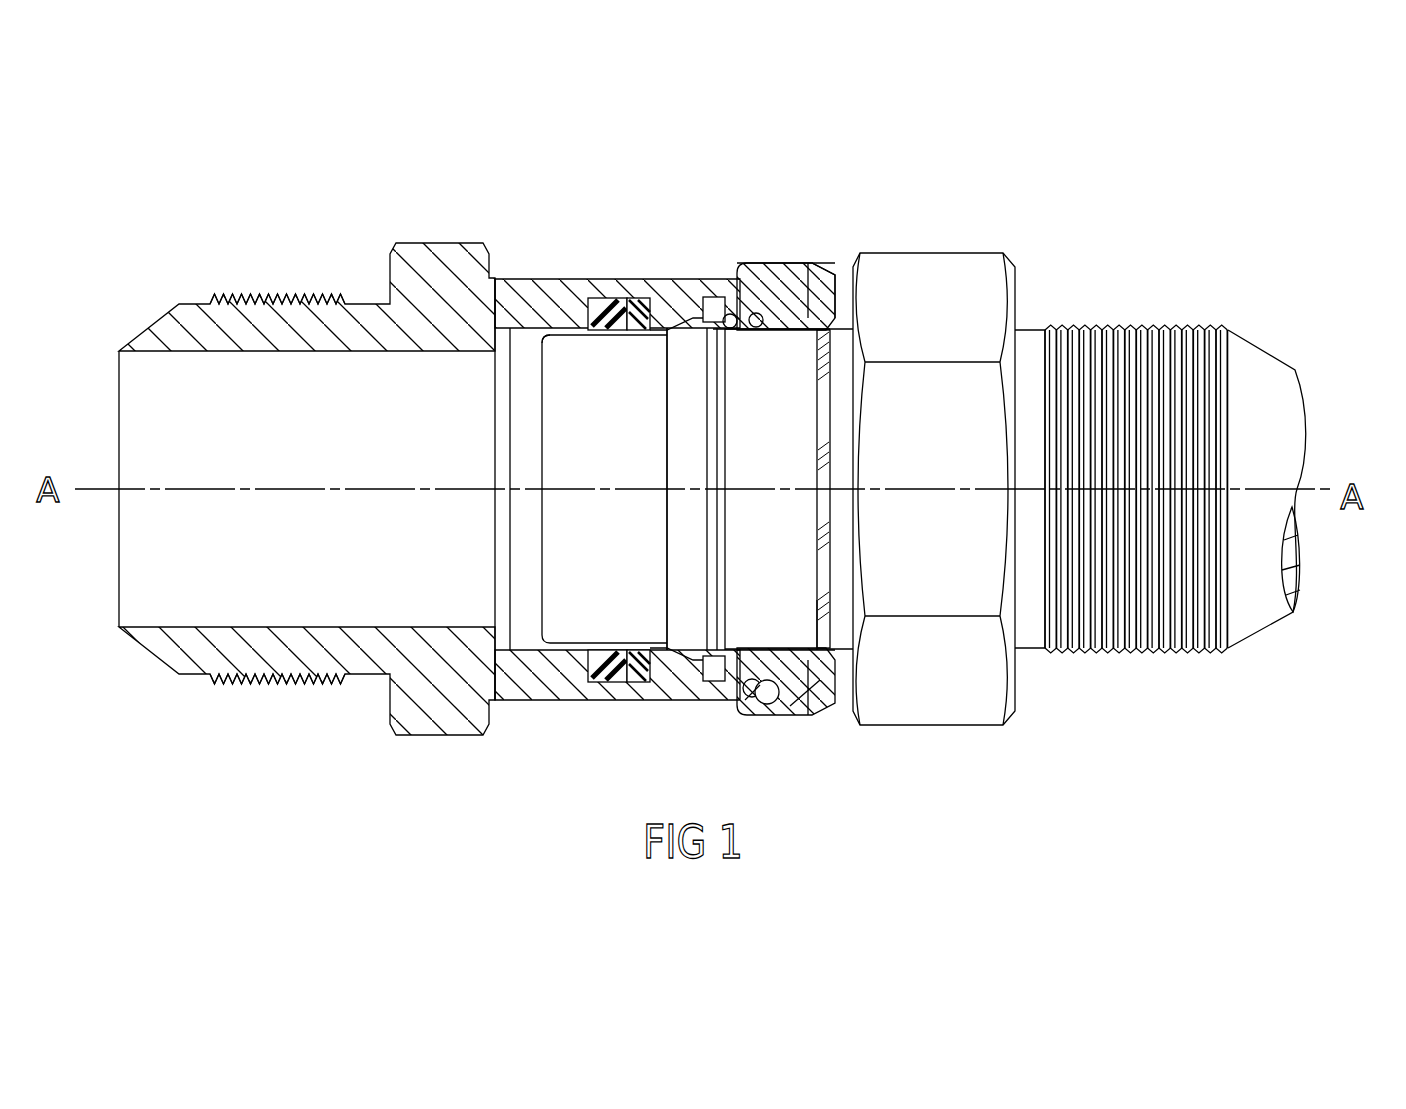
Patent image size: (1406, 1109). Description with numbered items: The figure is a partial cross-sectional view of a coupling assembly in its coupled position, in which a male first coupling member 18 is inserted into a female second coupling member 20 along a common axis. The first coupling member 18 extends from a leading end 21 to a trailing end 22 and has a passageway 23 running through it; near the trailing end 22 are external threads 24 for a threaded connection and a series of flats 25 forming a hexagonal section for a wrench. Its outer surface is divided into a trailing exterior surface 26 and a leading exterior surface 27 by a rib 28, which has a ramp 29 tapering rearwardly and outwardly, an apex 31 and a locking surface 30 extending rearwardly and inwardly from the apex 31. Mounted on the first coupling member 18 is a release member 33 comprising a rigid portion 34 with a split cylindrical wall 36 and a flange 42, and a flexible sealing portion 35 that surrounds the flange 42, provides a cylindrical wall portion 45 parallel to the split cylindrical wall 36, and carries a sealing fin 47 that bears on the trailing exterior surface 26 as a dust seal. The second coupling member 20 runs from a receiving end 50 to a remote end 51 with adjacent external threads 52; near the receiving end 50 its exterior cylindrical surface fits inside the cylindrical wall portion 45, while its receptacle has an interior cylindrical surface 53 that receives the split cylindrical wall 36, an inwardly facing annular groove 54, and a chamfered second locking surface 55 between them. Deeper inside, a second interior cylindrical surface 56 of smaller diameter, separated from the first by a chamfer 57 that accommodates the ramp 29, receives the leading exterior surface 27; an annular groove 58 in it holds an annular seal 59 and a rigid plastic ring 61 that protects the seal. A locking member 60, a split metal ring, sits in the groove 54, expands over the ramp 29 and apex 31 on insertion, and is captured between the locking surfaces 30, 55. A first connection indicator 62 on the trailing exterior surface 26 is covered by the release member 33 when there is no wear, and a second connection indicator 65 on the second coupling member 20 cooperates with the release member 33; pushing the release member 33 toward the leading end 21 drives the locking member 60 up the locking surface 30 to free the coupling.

The first coupling member 18 is at (1030, 292).
The second coupling member 20 is at (402, 205).
The leading end 21 is at (518, 640).
The trailing end 22 is at (1300, 378).
The passageway 23 is at (1292, 588).
The external threads 24 is at (1112, 325).
The flats 25 is at (938, 270).
The trailing exterior surface 26 is at (775, 650).
The leading exterior surface 27 is at (580, 335).
The rib 28 is at (660, 405).
The ramp 29 is at (688, 440).
The locking surface 30 is at (722, 523).
The apex 31 is at (707, 553).
The release member 33 is at (792, 240).
The rigid portion 34 is at (812, 332).
The sealing portion 35 is at (790, 262).
The split cylindrical wall 36 is at (752, 672).
The flange 42 is at (835, 720).
The cylindrical wall portion 45 is at (762, 705).
The sealing fin 47 is at (817, 650).
The receiving end 50 is at (745, 285).
The remote end 51 is at (117, 562).
The external threads 52 is at (300, 297).
The interior cylindrical surface 53 is at (742, 332).
The inwardly facing annular groove 54 is at (665, 318).
The second locking surface 55 is at (748, 700).
The second interior cylindrical surface 56 is at (510, 352).
The chamfer 57 is at (640, 298).
The inwardly facing annular groove 58 is at (600, 682).
The annular seal 59 is at (600, 298).
The locking member 60 is at (712, 645).
The rigid plastic ring 61 is at (637, 682).
The first connection indicator 62 is at (810, 465).
The second connection indicator 65 is at (777, 702).